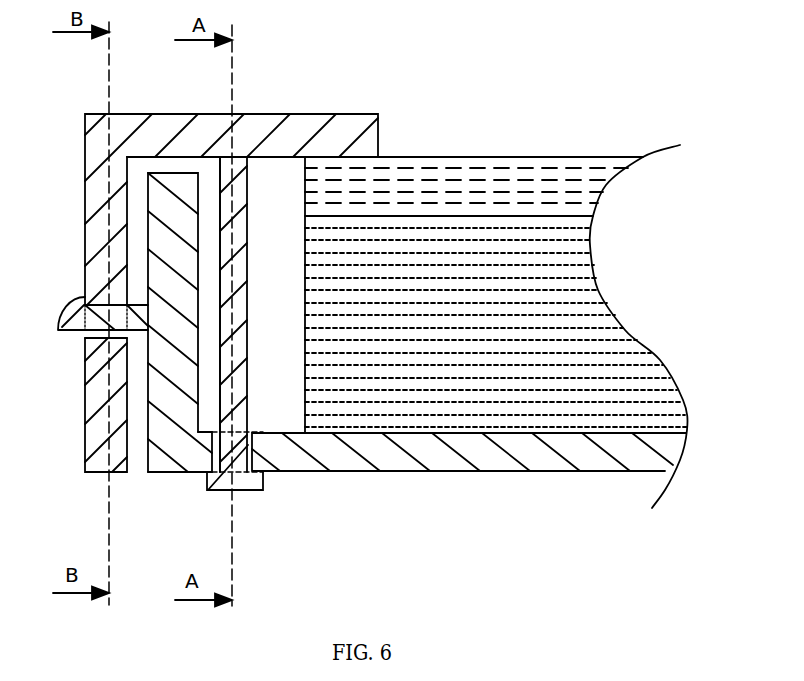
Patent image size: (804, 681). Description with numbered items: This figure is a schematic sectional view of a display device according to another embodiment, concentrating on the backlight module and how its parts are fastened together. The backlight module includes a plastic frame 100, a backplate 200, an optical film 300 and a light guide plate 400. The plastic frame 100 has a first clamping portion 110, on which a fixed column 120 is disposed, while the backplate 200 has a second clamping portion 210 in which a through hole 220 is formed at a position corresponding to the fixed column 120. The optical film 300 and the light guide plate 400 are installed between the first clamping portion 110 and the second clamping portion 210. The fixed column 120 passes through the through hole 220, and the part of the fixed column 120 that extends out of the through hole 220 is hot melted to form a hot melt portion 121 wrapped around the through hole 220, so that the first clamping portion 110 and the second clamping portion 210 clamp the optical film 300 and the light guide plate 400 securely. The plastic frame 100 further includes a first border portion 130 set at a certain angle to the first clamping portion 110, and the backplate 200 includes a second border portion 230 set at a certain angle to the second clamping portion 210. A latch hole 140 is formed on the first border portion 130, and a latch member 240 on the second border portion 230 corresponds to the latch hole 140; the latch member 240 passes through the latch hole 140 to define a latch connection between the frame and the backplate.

The plastic frame 100 is at (105, 151).
The first clamping portion 110 is at (315, 150).
The fixed column 120 is at (242, 200).
The hot melt portion 121 is at (247, 485).
The first border portion 130 is at (104, 229).
The latch hole 140 is at (110, 341).
The backplate 200 is at (167, 448).
The second clamping portion 210 is at (367, 463).
The through hole 220 is at (250, 448).
The second border portion 230 is at (177, 403).
The latch member 240 is at (72, 315).
The optical film 300 is at (520, 185).
The light guide plate 400 is at (607, 380).